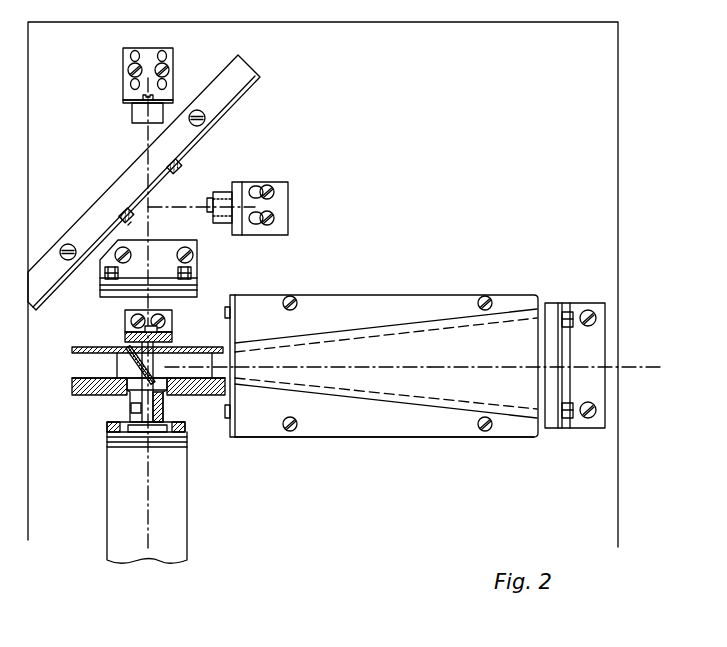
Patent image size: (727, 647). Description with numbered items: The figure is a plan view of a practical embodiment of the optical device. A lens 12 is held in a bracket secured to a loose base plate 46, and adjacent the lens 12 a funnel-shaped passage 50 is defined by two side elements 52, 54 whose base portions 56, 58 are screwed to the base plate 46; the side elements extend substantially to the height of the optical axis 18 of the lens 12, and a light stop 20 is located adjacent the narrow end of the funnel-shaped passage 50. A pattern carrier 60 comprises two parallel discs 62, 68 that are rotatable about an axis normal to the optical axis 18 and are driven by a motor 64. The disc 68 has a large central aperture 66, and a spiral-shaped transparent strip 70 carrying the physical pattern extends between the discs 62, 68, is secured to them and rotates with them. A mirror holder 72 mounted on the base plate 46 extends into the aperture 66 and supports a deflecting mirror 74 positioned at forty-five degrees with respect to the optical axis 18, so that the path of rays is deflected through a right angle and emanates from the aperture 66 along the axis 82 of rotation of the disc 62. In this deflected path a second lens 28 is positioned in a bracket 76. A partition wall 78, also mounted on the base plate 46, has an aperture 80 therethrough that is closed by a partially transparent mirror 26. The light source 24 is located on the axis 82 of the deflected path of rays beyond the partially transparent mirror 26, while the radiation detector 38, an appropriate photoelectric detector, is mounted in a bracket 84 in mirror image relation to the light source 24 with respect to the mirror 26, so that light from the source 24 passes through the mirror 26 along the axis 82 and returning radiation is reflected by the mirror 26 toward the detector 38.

The lens 12 is at (566, 357).
The optical axis 18 is at (630, 367).
The light stop 20 is at (234, 336).
The light source 24 is at (136, 134).
The partially transparent mirror 26 is at (178, 177).
The lens 28 is at (128, 286).
The radiation detector 38 is at (207, 204).
The base plate 46 is at (618, 88).
The funnel-shaped passage 50 is at (357, 353).
The side element 52 is at (318, 335).
The side element 54 is at (342, 392).
The base portion 56 is at (430, 296).
The base portion 58 is at (435, 434).
The pattern carrier 60 is at (80, 401).
The disc 62 is at (112, 388).
The motor 64 is at (178, 492).
The central aperture 66 is at (167, 352).
The disc 68 is at (195, 347).
The spiral-shaped transparent strip 70 is at (118, 350).
The mirror holder 72 is at (186, 306).
The deflecting mirror 74 is at (140, 365).
The bracket 76 is at (198, 277).
The partition wall 78 is at (262, 77).
The aperture 80 is at (176, 166).
The axis of rotation 82 is at (150, 219).
The bracket 84 is at (238, 193).